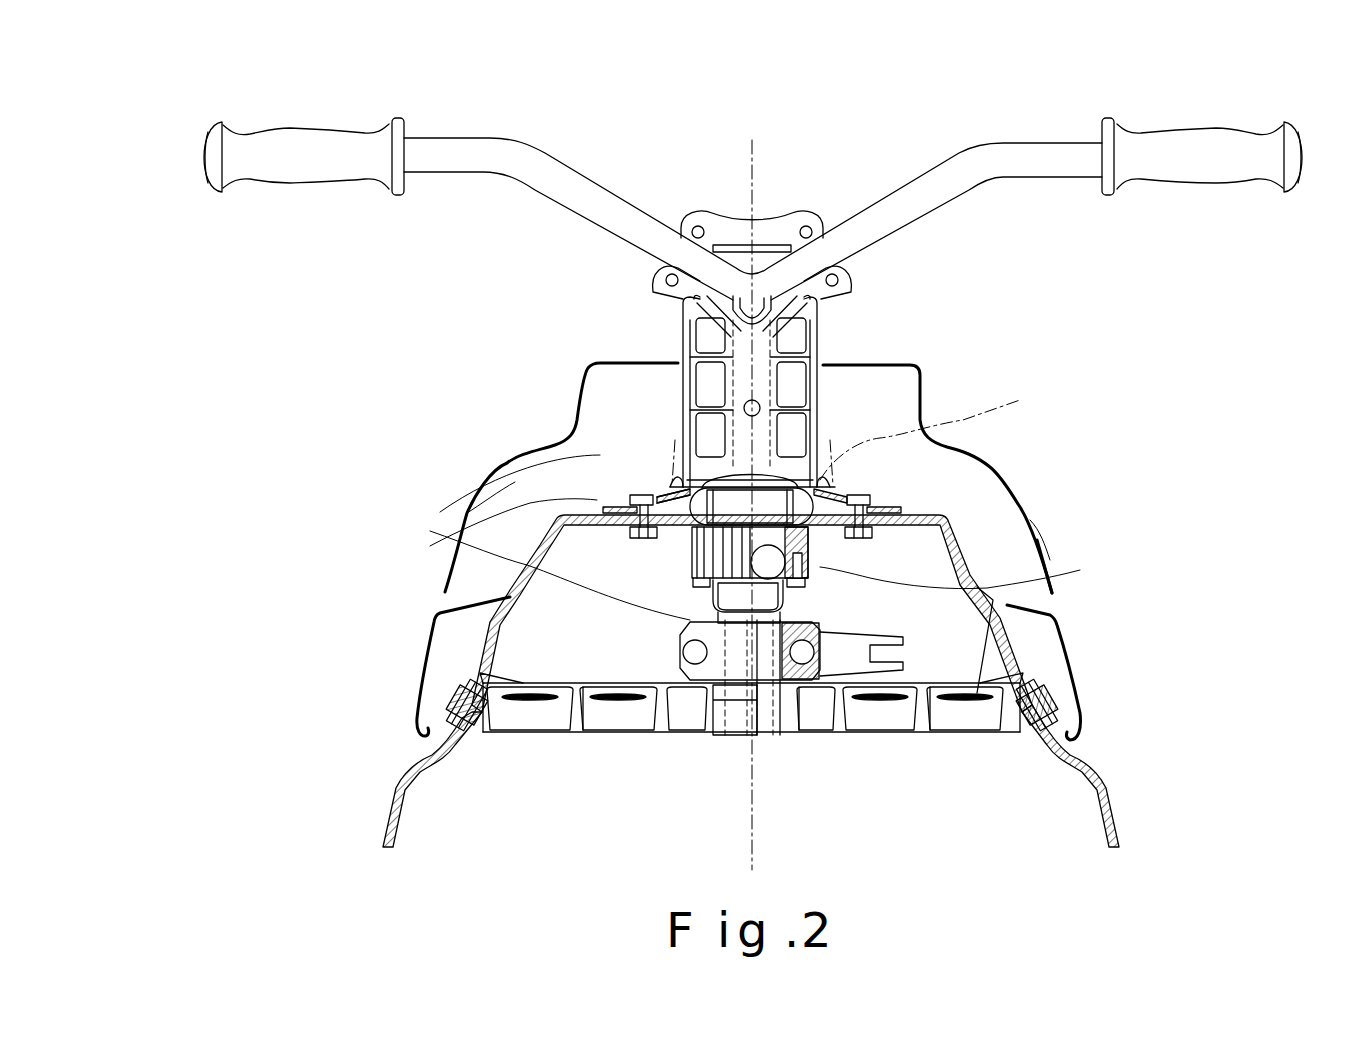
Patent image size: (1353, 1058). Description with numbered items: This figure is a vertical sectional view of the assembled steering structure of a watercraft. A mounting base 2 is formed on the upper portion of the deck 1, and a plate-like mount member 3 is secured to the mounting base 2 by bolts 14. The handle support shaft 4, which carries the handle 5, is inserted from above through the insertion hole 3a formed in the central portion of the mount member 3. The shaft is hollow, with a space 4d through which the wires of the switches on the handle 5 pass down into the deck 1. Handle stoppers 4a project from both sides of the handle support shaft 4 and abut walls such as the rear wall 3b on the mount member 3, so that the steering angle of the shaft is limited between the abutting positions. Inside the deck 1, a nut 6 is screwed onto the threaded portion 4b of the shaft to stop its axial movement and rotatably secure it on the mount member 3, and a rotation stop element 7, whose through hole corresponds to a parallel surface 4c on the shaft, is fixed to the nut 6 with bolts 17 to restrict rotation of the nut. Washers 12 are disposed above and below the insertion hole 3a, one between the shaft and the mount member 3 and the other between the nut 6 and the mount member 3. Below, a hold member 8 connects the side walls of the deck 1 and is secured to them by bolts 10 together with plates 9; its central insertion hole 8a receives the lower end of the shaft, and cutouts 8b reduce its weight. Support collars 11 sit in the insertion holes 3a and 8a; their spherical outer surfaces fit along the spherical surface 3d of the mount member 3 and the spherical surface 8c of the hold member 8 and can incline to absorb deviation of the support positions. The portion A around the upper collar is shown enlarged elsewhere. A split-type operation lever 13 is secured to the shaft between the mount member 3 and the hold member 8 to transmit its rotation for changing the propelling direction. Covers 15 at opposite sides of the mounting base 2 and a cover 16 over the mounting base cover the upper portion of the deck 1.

The deck 1 is at (1110, 810).
The mounting base 2 is at (910, 517).
The mount member 3 is at (577, 420).
The insertion hole 3a is at (643, 493).
The rear wall 3b is at (975, 405).
The spherical surface 3d is at (820, 530).
The handle support shaft 4 is at (820, 353).
The handle stoppers 4a is at (703, 393).
The threaded portion 4b is at (830, 655).
The parallel surface 4c is at (977, 695).
The space 4d is at (765, 735).
The handle 5 is at (928, 190).
The nut 6 is at (780, 625).
The rotation stop element 7 is at (680, 627).
The hold member 8 is at (590, 735).
The insertion hole 8a is at (685, 735).
The cutouts 8b is at (960, 700).
The spherical surface 8c is at (802, 735).
The plates 9 is at (1050, 730).
The bolts 10 is at (1045, 695).
The support collars 11 is at (690, 503).
The washers 12 is at (690, 528).
The operation lever 13 is at (845, 645).
The bolts 14 is at (610, 503).
The cover 15 is at (1075, 665).
The cover 16 is at (1040, 542).
The bolts 17 is at (690, 603).
The portion A is at (703, 475).